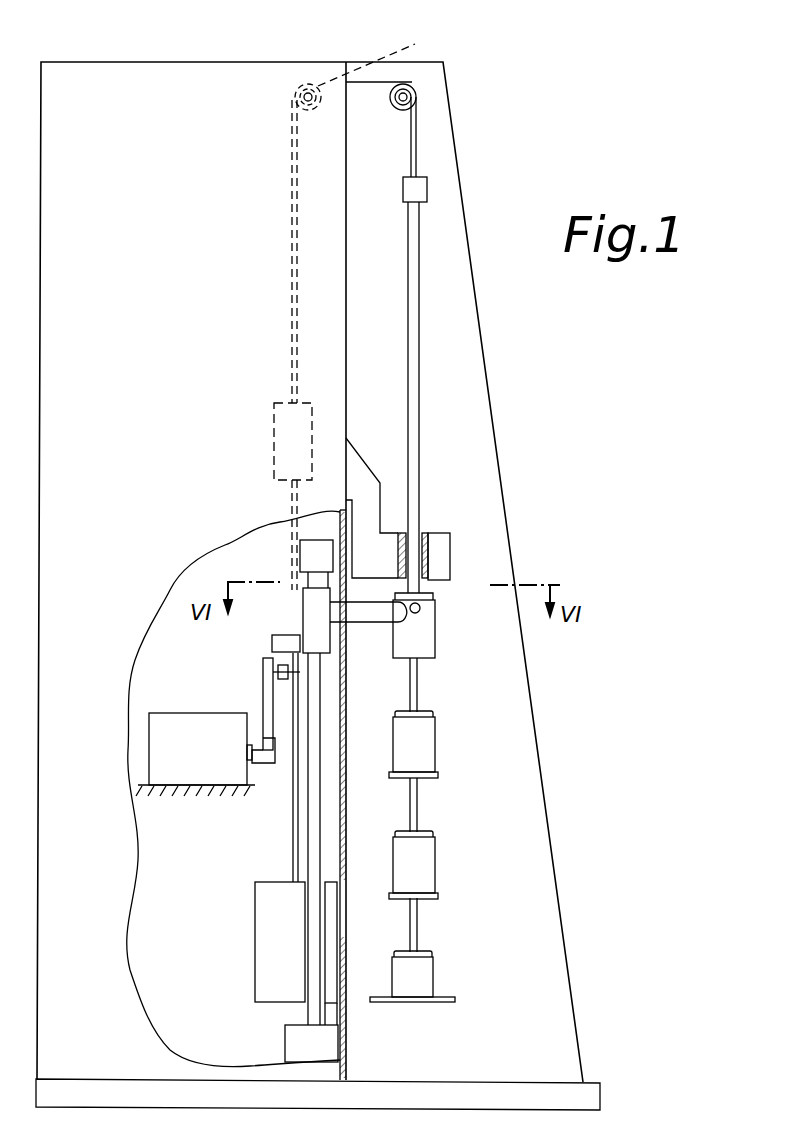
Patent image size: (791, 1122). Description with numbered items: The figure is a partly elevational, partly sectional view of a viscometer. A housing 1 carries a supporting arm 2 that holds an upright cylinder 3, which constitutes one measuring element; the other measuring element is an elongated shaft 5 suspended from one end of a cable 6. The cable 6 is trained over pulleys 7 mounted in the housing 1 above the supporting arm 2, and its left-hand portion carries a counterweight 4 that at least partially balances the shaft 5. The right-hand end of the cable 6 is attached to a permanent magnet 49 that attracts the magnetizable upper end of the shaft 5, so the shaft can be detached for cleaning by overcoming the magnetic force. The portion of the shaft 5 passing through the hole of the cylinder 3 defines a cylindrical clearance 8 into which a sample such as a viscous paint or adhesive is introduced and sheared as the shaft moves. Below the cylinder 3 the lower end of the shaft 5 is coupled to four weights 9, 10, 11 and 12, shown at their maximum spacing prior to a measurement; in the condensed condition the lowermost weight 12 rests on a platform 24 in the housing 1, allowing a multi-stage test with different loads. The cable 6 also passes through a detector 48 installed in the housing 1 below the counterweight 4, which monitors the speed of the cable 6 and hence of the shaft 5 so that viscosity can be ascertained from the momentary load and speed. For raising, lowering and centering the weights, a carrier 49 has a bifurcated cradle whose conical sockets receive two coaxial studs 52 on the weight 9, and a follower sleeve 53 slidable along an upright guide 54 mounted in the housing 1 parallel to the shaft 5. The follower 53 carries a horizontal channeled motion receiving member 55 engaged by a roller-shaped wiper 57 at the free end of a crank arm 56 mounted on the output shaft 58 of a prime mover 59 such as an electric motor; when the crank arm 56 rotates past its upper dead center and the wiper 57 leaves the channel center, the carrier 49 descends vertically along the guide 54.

The housing 1 is at (479, 300).
The supporting arm 2 is at (358, 472).
The cylinder 3 is at (450, 558).
The counterweight 4 is at (272, 440).
The shaft 5 is at (418, 438).
The cable 6 is at (420, 135).
The pulleys 7 is at (404, 84).
The clearance 8 is at (402, 530).
The weight 9 is at (435, 642).
The weight 10 is at (412, 757).
The weight 11 is at (418, 877).
The weight 12 is at (415, 984).
The platform 24 is at (545, 1081).
The detector 48 is at (262, 935).
The permanent magnet 49 is at (420, 188).
The studs 52 is at (435, 607).
The follower sleeve 53 is at (302, 613).
The guide 54 is at (312, 948).
The motion receiving member 55 is at (272, 641).
The crank arm 56 is at (265, 692).
The wiper 57 is at (288, 670).
The output shaft 58 is at (255, 765).
The prime mover 59 is at (172, 772).